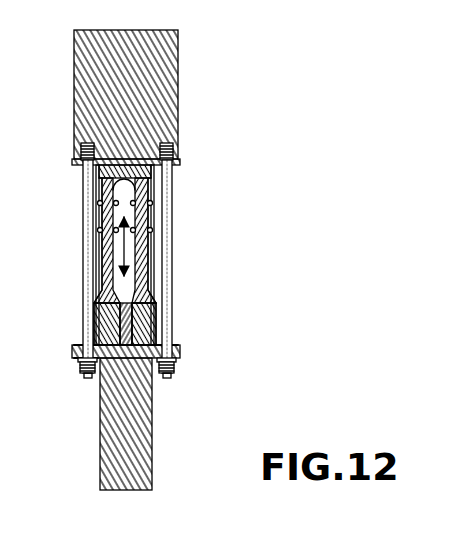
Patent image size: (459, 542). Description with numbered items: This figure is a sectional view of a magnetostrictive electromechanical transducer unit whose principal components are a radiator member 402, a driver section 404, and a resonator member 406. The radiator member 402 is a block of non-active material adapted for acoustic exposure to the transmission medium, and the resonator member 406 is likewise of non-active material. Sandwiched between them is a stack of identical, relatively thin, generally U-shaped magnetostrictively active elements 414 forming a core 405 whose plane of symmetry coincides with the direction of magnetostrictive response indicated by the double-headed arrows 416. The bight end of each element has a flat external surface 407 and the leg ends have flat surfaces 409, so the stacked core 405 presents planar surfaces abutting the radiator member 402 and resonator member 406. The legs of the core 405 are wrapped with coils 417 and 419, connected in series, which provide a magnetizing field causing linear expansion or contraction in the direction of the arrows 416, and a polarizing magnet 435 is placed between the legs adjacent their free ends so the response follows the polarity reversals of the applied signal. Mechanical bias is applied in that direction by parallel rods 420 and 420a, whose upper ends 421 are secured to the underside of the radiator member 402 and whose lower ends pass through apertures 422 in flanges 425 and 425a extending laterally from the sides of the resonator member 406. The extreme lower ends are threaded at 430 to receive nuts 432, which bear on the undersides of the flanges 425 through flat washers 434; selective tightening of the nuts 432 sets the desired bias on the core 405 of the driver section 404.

The radiator member 402 is at (184, 85).
The driver section 404 is at (178, 219).
The core 405 is at (155, 255).
The resonator member 406 is at (159, 441).
The flat external surface 407 is at (127, 164).
The flat surfaces 409 is at (172, 350).
The magnetostrictively active elements 414 is at (157, 272).
The double-headed arrows 416 is at (110, 244).
The coil 417 is at (97, 203).
The coil 419 is at (97, 230).
The rod 420 is at (82, 182).
The rod 420a is at (173, 190).
The upper ends of rods 421 is at (81, 155).
The apertures 422 is at (78, 357).
The flange 425 is at (78, 346).
The flange 425a is at (175, 347).
The threaded lower ends 430 is at (88, 380).
The nuts 432 is at (81, 370).
The flat washers 434 is at (80, 362).
The polarizing magnet 435 is at (101, 318).